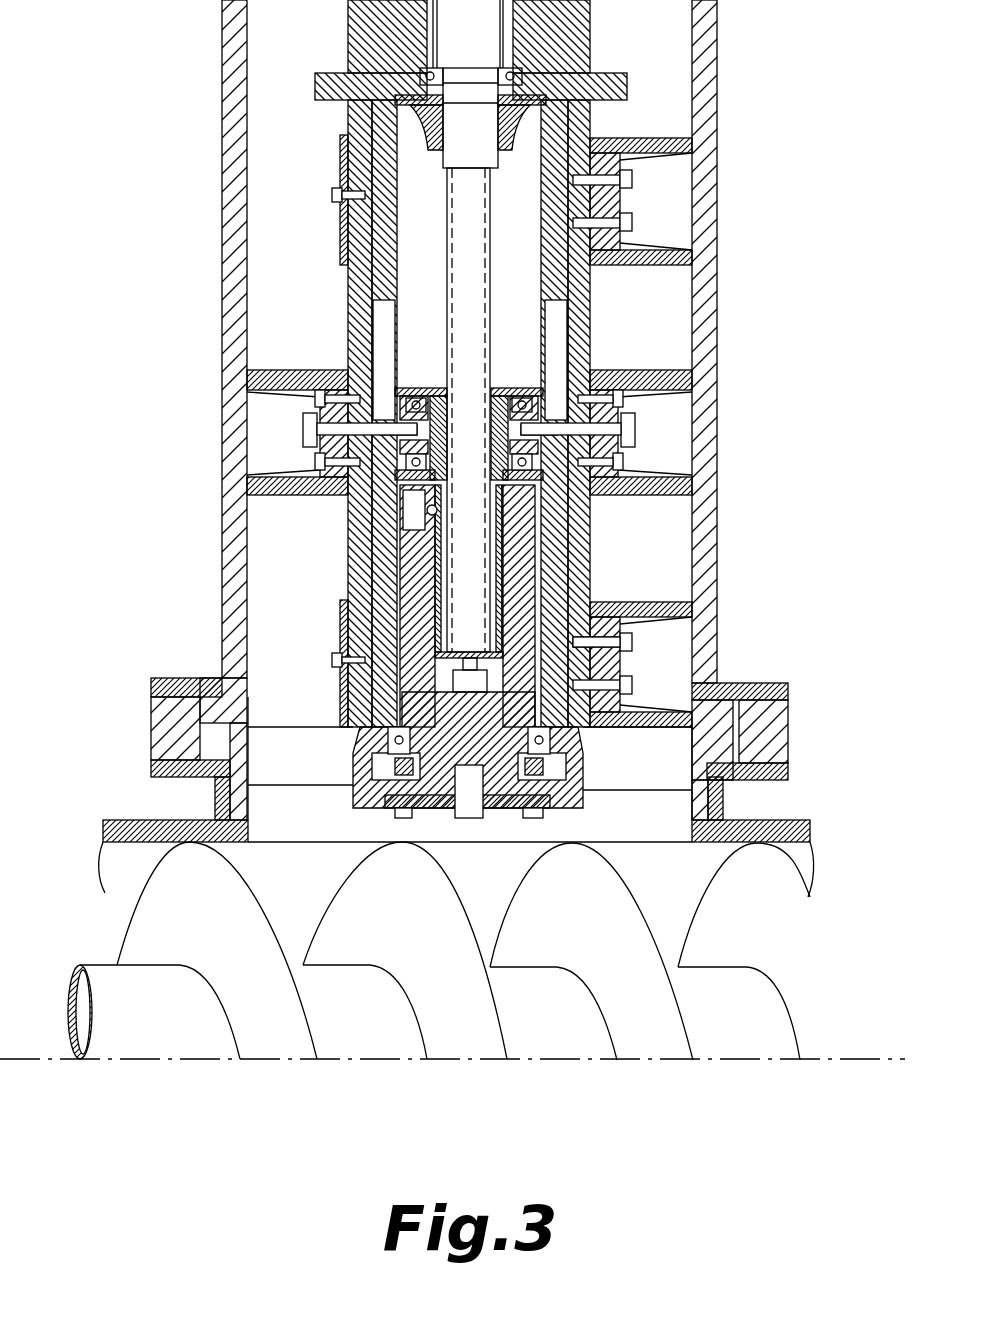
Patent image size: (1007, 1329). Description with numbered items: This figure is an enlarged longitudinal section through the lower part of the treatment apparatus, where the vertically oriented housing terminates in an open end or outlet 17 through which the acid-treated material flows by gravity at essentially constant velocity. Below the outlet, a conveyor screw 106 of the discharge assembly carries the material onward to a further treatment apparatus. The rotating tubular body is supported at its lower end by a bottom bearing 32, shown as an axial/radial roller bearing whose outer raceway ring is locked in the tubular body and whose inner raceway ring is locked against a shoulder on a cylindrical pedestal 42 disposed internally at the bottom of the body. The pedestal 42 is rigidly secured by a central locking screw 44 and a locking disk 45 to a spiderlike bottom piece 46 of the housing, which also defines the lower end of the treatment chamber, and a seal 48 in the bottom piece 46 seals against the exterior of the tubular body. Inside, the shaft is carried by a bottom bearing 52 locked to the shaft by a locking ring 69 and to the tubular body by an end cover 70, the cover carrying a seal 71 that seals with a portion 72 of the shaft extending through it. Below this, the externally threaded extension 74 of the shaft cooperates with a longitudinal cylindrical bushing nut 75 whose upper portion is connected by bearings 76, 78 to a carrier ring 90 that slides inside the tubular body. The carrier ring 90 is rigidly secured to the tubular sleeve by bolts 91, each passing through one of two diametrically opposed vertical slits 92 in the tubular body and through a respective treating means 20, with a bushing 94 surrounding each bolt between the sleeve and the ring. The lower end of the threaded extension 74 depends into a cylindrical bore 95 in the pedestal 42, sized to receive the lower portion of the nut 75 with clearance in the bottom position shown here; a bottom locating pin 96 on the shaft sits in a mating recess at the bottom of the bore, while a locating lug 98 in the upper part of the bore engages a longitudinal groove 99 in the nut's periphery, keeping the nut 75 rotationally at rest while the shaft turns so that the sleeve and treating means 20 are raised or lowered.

The open end or outlet 17 is at (280, 765).
The treating means 20 is at (650, 138).
The bottom bearing 32 is at (370, 750).
The cylindrical pedestal 42 is at (400, 560).
The central locking screw 44 is at (470, 813).
The locking disk 45 is at (430, 803).
The bottom piece 46 is at (178, 733).
The seal 48 is at (580, 743).
The bottom bearing 52 is at (515, 80).
The locking ring 69 is at (425, 80).
The end cover 70 is at (500, 163).
The seal 71 is at (432, 135).
The portion 72 is at (450, 155).
The externally threaded extension 74 is at (447, 257).
The bushing nut 75 is at (500, 580).
The bearing 76 is at (543, 390).
The bearing 78 is at (555, 478).
The carrier ring 90 is at (408, 388).
The bolts 91 is at (330, 430).
The slits 92 is at (380, 315).
The bushing 94 is at (385, 417).
The cylindrical bore 95 is at (600, 652).
The bottom locating pin 96 is at (453, 677).
The locating lug 98 is at (425, 512).
The longitudinal groove 99 is at (437, 620).
The conveyor screw 106 is at (157, 1035).